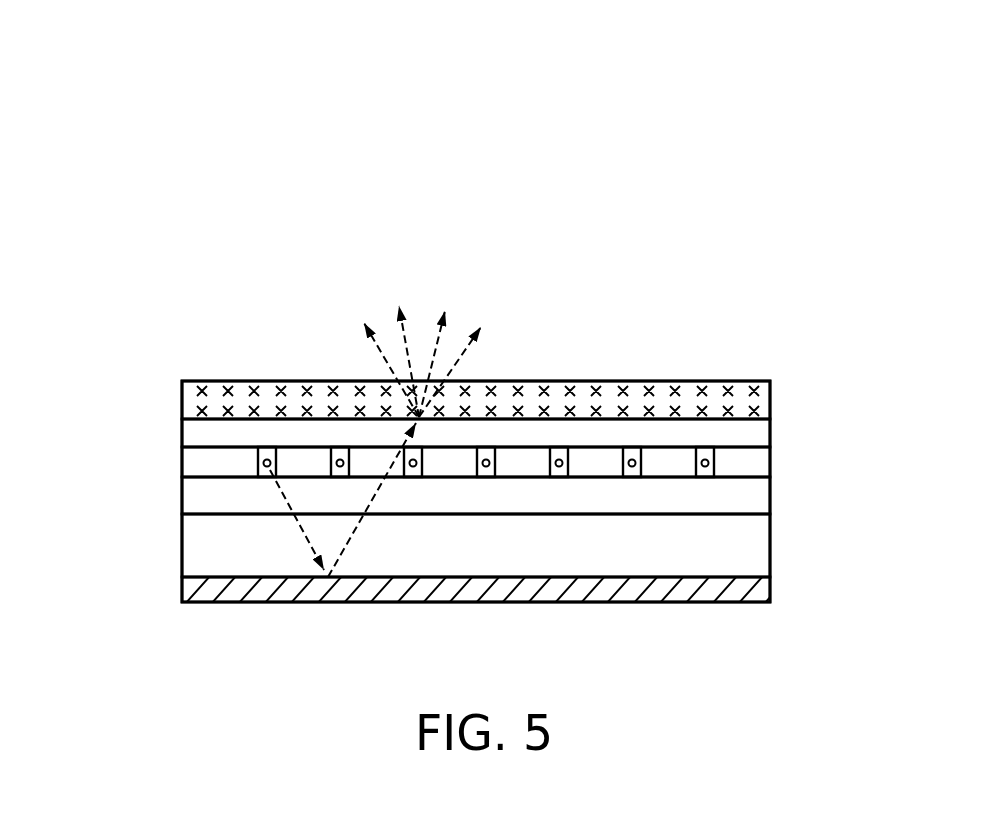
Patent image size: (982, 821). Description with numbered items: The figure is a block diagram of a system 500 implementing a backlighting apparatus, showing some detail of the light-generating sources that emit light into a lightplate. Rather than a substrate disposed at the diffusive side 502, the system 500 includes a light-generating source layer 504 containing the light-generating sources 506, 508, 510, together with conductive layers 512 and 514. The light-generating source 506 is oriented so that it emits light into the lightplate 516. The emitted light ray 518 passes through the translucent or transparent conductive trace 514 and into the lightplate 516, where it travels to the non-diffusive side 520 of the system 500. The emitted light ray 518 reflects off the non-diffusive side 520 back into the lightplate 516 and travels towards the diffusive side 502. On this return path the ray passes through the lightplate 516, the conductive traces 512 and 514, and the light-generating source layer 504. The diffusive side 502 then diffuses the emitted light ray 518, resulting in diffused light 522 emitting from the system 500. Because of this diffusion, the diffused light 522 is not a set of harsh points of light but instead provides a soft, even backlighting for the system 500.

The system 500 is at (476, 308).
The diffusive side 502 is at (182, 384).
The light-generating source layer 504 is at (182, 462).
The light-generating source 506 is at (268, 461).
The light-generating source 508 is at (487, 461).
The light-generating source 510 is at (634, 461).
The conductive layer 512 is at (182, 422).
The conductive layer 514 is at (182, 505).
The lightplate 516 is at (182, 550).
The emitted light ray 518 is at (358, 538).
The non-diffusive side 520 is at (553, 600).
The diffused light 522 is at (423, 310).